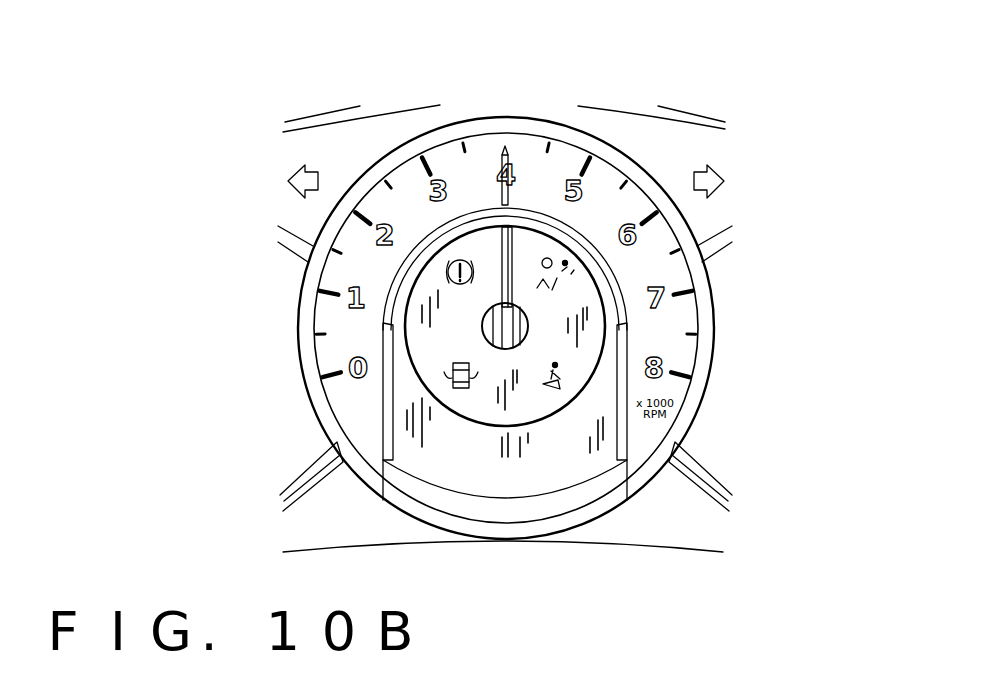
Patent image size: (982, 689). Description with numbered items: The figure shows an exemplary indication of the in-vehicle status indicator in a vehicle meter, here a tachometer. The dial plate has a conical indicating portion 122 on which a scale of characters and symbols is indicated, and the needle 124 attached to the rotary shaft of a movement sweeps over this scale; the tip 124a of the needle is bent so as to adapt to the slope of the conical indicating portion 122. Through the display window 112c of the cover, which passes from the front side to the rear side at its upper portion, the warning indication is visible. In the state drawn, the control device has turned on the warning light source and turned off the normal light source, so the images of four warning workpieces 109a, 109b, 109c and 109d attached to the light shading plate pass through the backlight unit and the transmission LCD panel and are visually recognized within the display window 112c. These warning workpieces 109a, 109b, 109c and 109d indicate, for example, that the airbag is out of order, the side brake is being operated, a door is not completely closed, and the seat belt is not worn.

The warning workpiece 109a is at (578, 282).
The warning workpiece 109b is at (452, 255).
The warning workpiece 109c is at (440, 373).
The warning workpiece 109d is at (563, 386).
The display window 112c is at (612, 357).
The conical indicating portion 122 is at (610, 148).
The needle 124 is at (497, 262).
The tip 124a is at (499, 205).